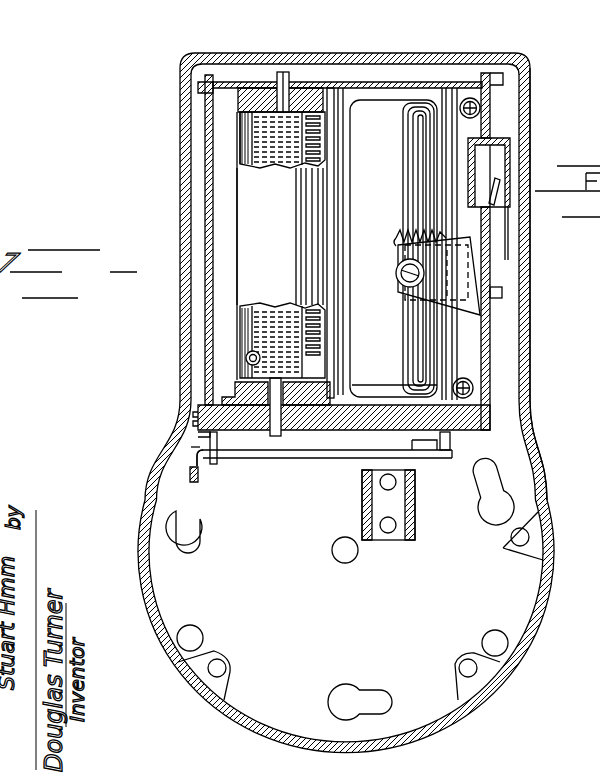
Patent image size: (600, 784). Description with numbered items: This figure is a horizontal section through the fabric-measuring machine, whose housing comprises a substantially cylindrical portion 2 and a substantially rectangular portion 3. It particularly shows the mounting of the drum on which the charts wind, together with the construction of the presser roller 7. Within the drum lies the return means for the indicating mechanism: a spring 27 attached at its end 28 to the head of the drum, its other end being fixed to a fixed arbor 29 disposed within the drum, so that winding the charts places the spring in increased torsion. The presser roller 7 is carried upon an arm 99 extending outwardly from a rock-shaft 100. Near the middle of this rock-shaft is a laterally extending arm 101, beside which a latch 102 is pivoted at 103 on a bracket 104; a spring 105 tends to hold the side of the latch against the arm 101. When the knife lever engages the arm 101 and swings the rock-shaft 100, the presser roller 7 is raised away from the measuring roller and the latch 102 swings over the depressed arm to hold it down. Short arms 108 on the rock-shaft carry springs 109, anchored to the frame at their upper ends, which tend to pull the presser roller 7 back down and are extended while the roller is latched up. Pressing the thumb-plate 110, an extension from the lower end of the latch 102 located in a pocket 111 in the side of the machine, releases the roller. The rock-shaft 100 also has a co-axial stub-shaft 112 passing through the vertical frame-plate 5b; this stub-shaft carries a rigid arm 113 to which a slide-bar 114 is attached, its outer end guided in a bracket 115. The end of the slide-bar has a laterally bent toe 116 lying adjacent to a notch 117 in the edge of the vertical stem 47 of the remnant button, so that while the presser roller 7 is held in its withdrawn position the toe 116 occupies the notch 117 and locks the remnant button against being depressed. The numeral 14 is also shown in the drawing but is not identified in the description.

The cylindrical portion 2 is at (555, 579).
The rectangular portion 3 is at (533, 427).
The vertical frame-plate 5b is at (300, 432).
The presser roller 7 is at (405, 248).
The solenoid core 14 is at (280, 188).
The spring 27 is at (258, 128).
The end of the spring 28 is at (308, 112).
The fixed arbor 29 is at (300, 365).
The vertical stem 47 is at (204, 476).
The arm 99 is at (408, 398).
The rock-shaft 100 is at (455, 350).
The laterally extending arm 101 is at (503, 293).
The latch 102 is at (478, 272).
The pivot 103 is at (397, 277).
The bracket 104 is at (432, 290).
The spring 105 is at (410, 232).
The short arms 108 is at (490, 125).
The springs 109 is at (482, 110).
The thumb-plate 110 is at (500, 190).
The pocket 111 is at (488, 165).
The stub-shaft 112 is at (442, 450).
The rigid arm 113 is at (416, 476).
The slide-bar 114 is at (306, 455).
The bracket 115 is at (185, 437).
The toe 116 is at (190, 447).
The notch 117 is at (192, 485).